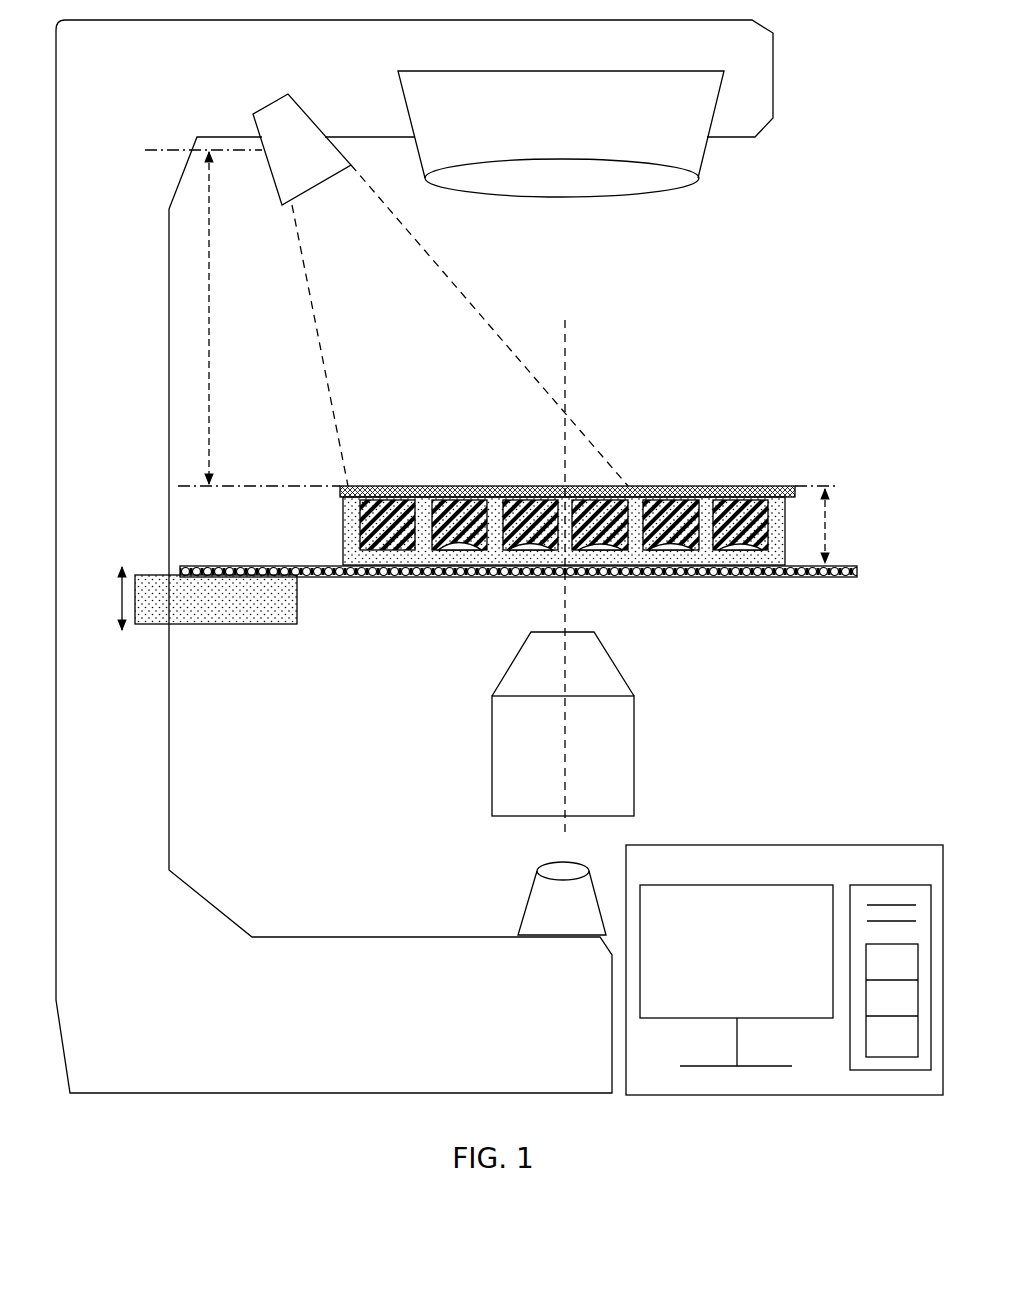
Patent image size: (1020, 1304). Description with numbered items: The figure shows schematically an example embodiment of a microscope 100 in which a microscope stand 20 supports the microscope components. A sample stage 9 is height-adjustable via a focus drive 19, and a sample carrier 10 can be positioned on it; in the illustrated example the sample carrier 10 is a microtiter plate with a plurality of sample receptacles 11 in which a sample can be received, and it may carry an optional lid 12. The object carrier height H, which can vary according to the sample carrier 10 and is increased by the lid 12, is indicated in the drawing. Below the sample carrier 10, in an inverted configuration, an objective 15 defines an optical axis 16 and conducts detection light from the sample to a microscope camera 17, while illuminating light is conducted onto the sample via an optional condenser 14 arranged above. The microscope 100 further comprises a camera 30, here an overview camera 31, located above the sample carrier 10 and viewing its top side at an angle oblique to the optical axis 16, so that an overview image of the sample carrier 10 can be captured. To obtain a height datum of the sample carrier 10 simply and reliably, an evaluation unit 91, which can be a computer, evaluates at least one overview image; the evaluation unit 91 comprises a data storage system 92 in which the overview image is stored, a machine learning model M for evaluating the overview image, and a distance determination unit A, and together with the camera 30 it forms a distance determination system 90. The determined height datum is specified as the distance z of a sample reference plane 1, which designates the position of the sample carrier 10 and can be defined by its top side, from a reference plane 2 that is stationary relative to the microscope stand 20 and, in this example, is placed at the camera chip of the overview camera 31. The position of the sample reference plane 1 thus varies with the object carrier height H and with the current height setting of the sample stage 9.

The microscope 100 is at (828, 48).
The microscope stand 20 is at (134, 425).
The condenser 14 is at (581, 125).
The overview camera 31 is at (308, 174).
The camera 30 is at (439, 290).
The reference plane 2 is at (248, 152).
The distance z is at (212, 306).
The sample reference plane 1 is at (237, 486).
The sample carrier 10 is at (553, 476).
The lid 12 is at (790, 487).
The sample receptacles 11 is at (388, 520).
The sample stage 9 is at (837, 578).
The object carrier height H is at (831, 520).
The focus drive 19 is at (229, 615).
The optical axis 16 is at (567, 613).
The objective 15 is at (576, 757).
The microscope camera 17 is at (575, 914).
The distance determination system 90 is at (784, 936).
The evaluation unit 91 is at (834, 1068).
The data storage system 92 is at (905, 973).
The machine learning model M is at (902, 1009).
The distance determination unit A is at (900, 1049).